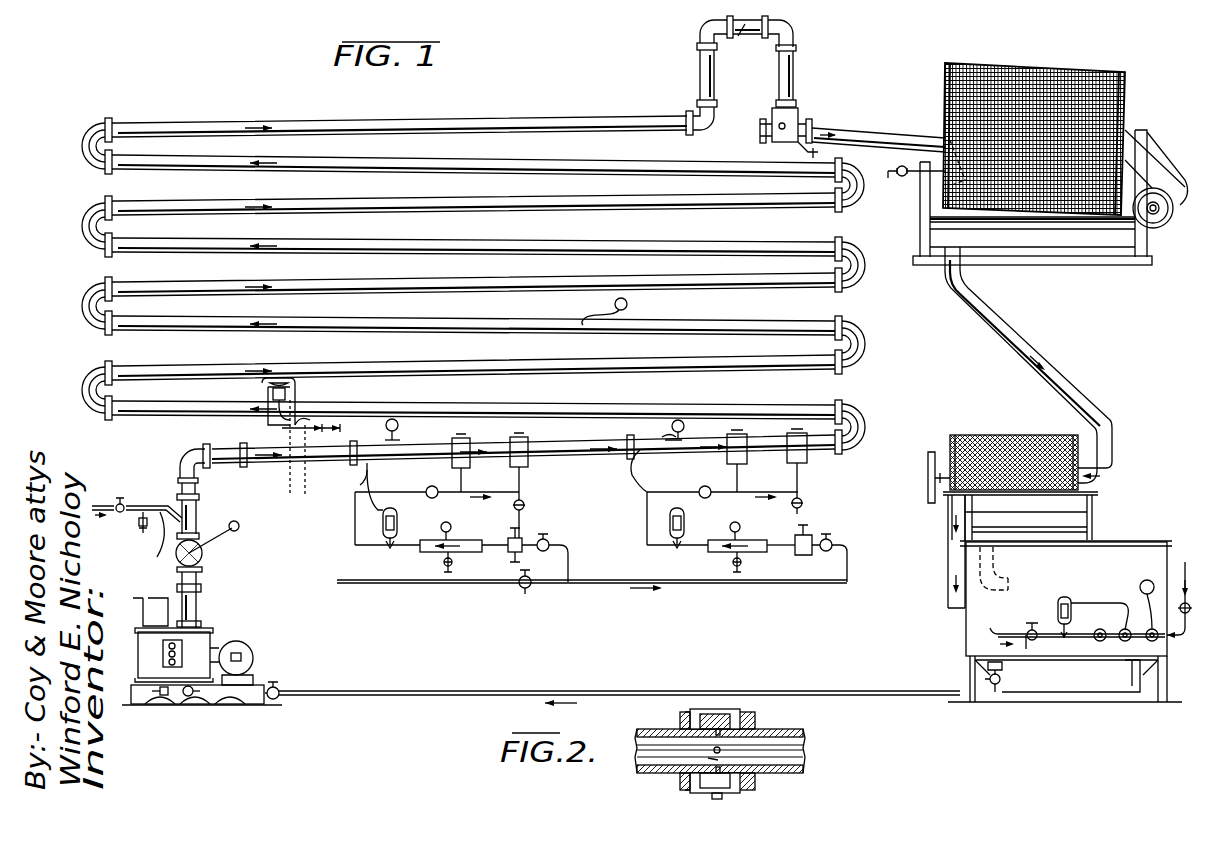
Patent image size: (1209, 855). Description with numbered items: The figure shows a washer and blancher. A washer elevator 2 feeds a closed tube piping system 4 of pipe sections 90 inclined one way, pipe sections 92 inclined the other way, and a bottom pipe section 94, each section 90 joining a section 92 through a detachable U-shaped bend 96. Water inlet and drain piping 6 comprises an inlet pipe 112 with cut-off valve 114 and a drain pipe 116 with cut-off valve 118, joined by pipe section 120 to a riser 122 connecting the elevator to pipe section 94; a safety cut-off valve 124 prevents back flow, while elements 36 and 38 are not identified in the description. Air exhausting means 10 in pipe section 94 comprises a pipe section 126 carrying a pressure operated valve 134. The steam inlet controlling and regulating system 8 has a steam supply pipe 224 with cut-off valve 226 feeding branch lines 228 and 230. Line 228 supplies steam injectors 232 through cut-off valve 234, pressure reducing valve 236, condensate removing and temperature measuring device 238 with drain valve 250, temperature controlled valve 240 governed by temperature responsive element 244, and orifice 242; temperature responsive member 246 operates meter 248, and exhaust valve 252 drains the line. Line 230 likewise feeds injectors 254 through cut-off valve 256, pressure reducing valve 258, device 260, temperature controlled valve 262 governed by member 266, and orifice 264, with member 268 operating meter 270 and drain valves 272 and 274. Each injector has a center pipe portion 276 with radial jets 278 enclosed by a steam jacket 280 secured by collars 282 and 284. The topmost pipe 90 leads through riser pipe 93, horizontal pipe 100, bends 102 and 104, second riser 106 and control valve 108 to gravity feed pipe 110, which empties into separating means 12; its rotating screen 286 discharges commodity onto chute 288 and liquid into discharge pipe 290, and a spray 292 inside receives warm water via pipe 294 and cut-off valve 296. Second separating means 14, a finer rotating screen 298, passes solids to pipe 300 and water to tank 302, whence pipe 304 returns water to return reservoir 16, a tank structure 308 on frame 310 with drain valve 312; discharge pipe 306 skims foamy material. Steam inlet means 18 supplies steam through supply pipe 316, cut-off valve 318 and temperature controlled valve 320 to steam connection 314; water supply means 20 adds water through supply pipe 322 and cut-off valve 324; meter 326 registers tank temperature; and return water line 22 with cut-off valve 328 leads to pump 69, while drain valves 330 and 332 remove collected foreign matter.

In FIG. 1, the washer elevator 2 is at (219, 639).
In FIG. 1, the closed tube piping system 4 is at (95, 269).
In FIG. 1, the water inlet and drain piping 6 is at (138, 502).
In FIG. 1, the steam inlet controlling and regulating system 8 is at (573, 570).
In FIG. 1, the air exhausting means 10 is at (232, 436).
In FIG. 1, the separating means 12 is at (937, 110).
In FIG. 1, the second separating means 14 is at (944, 436).
In FIG. 1, the return reservoir or tank 16 is at (978, 615).
In FIG. 1, the temperature controlled steam inlet means 18 is at (1038, 615).
In FIG. 1, the water supply means 20 is at (1180, 655).
In FIG. 1, the return water line 22 is at (670, 690).
In FIG. 1, the hopper 36 is at (153, 600).
In FIG. 1, the pump inlet pipe 38 is at (195, 612).
In FIG. 1, the pump 69 is at (254, 656).
In FIG. 1, the pipe sections 90 is at (460, 116).
In FIG. 1, the pipe sections 92 is at (474, 161).
In FIG. 1, the riser pipe 93 is at (700, 73).
In FIG. 1, the pipe section 94 is at (575, 452).
In FIG. 1, the U-shaped pipe or bend 96 is at (866, 268).
In FIG. 1, the horizontal pipe 100 is at (756, 35).
In FIG. 1, the bend 102 is at (698, 31).
In FIG. 1, the bend 104 is at (796, 31).
In FIG. 1, the second riser 106 is at (796, 73).
In FIG. 1, the control valve 108 is at (800, 123).
In FIG. 1, the gravity feed pipe 110 is at (858, 131).
In FIG. 1, the inlet pipe 112 is at (90, 505).
In FIG. 1, the cut-off valve 114 is at (121, 513).
In FIG. 1, the drain pipe 116 is at (148, 535).
In FIG. 1, the cut-off valve 118 is at (180, 568).
In FIG. 1, the pipe section 120 is at (177, 495).
In FIG. 1, the riser 122 is at (197, 518).
In FIG. 1, the safety cut-off valve 124 is at (203, 551).
In FIG. 1, the pipe section 126 is at (320, 465).
In FIG. 1, the pressure operated valve 134 is at (265, 387).
In FIG. 1, the steam supply pipe 224 is at (412, 584).
In FIG. 1, the cut-off valve 226 is at (530, 590).
In FIG. 1, the branch line 228 is at (567, 580).
In FIG. 1, the branch line 230 is at (862, 583).
In FIG. 1, the steam injector 232 is at (520, 439).
In FIG. 1, the cut-off valve 234 is at (548, 540).
In FIG. 1, the pressure reducing valve 236 is at (522, 528).
In FIG. 1, the condensate removing and temperature measuring device 238 is at (468, 540).
In FIG. 1, the temperature controlled valve 240 is at (400, 529).
In FIG. 1, the orifice 242 is at (428, 486).
In FIG. 1, the temperature responsive element 244 is at (367, 440).
In FIG. 1, the temperature responsive member 246 is at (400, 441).
In FIG. 1, the indicating or recording meter 248 is at (396, 418).
In FIG. 1, the drain valve 250 is at (440, 560).
In FIG. 1, the drain or exhaust valve 252 is at (524, 500).
In FIG. 1, the injector 254 is at (800, 436).
In FIG. 1, the cut-off valve 256 is at (832, 540).
In FIG. 1, the pressure reducing valve 258 is at (808, 528).
In FIG. 1, the condensate removing and temperature measuring device 260 is at (758, 540).
In FIG. 1, the temperature controlled valve 262 is at (690, 532).
In FIG. 1, the orifice 264 is at (704, 484).
In FIG. 1, the temperature responsive member 266 is at (630, 465).
In FIG. 1, the temperature responsive member 268 is at (680, 432).
In FIG. 1, the indicating or recording meter 270 is at (680, 418).
In FIG. 1, the drain and exhaust valve 272 is at (735, 570).
In FIG. 1, the drain and exhaust valve 274 is at (805, 500).
In FIG. 2, the center pipe portion 276 is at (790, 739).
In FIG. 2, the openings or jets 278 is at (718, 740).
In FIG. 2, the steam box or jacket 280 is at (740, 713).
In FIG. 2, the collar or nut 282 is at (688, 719).
In FIG. 2, the collar or nut 284 is at (760, 721).
In FIG. 1, the cylindrical rotating screen 286 is at (1108, 88).
In FIG. 1, the inclined chute, flume or pipe 288 is at (1170, 188).
In FIG. 1, the discharge pipe 290 is at (1018, 337).
In FIG. 1, the spray 292 is at (945, 197).
In FIG. 1, the pipe 294 is at (892, 177).
In FIG. 1, the cut-off valve 296 is at (902, 165).
In FIG. 1, the rotating screen 298 is at (995, 432).
In FIG. 1, the pipe 300 is at (952, 508).
In FIG. 1, the tank 302 is at (1075, 514).
In FIG. 1, the pipe 304 is at (978, 563).
In FIG. 1, the discharge pipe 306 is at (948, 584).
In FIG. 1, the tank structure 308 is at (1108, 548).
In FIG. 1, the frame 310 is at (1152, 697).
In FIG. 1, the drain valve 312 is at (1005, 695).
In FIG. 1, the steam connection 314 is at (1100, 643).
In FIG. 1, the supply pipe 316 is at (990, 633).
In FIG. 1, the cut-off valve 318 is at (1035, 643).
In FIG. 1, the temperature controlled valve 320 is at (1075, 630).
In FIG. 1, the supply pipe 322 is at (1185, 562).
In FIG. 1, the cut-off valve 324 is at (1180, 603).
In FIG. 1, the indicating or recording meter 326 is at (1140, 590).
In FIG. 1, the cut-off valve 328 is at (282, 689).
In FIG. 1, the drain valve 330 is at (200, 698).
In FIG. 1, the drain valve 332 is at (168, 698).